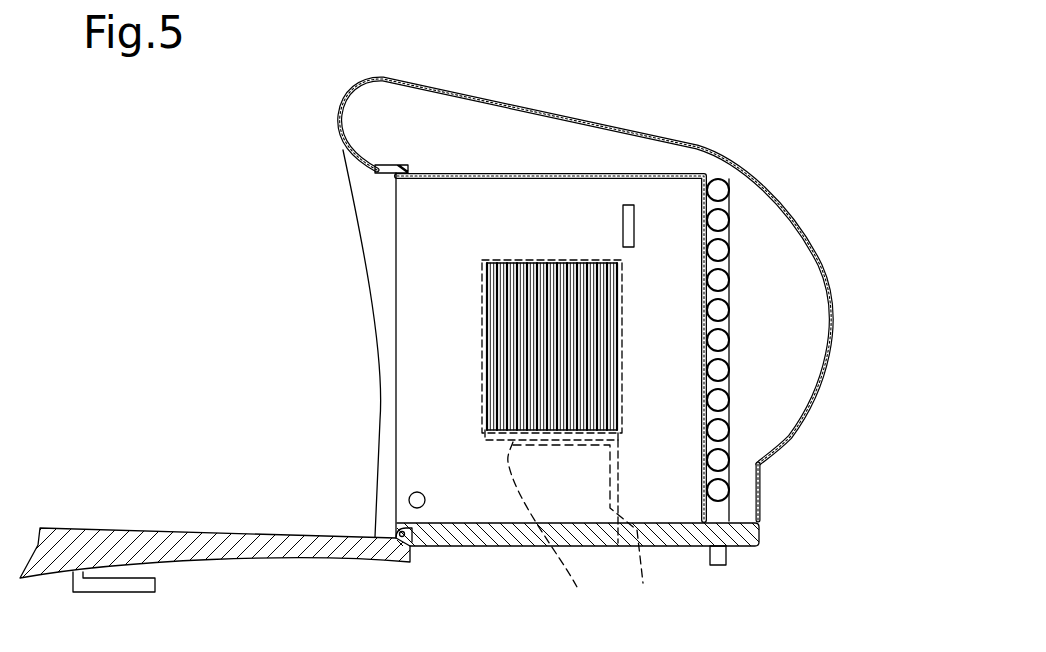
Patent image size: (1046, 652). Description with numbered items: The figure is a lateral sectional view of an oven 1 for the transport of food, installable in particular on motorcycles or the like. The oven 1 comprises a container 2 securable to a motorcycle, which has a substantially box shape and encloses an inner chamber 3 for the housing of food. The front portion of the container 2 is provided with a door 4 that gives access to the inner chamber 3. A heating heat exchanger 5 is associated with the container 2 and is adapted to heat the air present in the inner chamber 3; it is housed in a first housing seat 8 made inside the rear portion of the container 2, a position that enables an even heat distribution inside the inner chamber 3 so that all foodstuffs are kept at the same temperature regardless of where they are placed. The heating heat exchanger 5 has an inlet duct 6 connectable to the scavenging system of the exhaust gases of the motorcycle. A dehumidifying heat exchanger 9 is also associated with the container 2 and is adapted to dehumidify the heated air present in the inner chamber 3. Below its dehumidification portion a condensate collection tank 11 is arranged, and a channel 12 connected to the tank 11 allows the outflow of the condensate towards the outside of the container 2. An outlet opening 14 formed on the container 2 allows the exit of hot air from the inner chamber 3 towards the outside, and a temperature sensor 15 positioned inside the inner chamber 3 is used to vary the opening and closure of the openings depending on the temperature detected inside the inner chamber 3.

The oven 1 is at (775, 70).
The container 2 is at (840, 274).
The inner chamber 3 is at (447, 407).
The door 4 is at (115, 538).
The heating heat exchanger 5 is at (718, 220).
The inlet duct 6 is at (713, 555).
The first housing seat 8 is at (745, 488).
The dehumidifying heat exchanger 9 is at (450, 315).
The condensate collection tank 11 is at (555, 530).
The channel 12 is at (590, 529).
The outlet opening 14 is at (417, 500).
The temperature sensor 15 is at (627, 217).